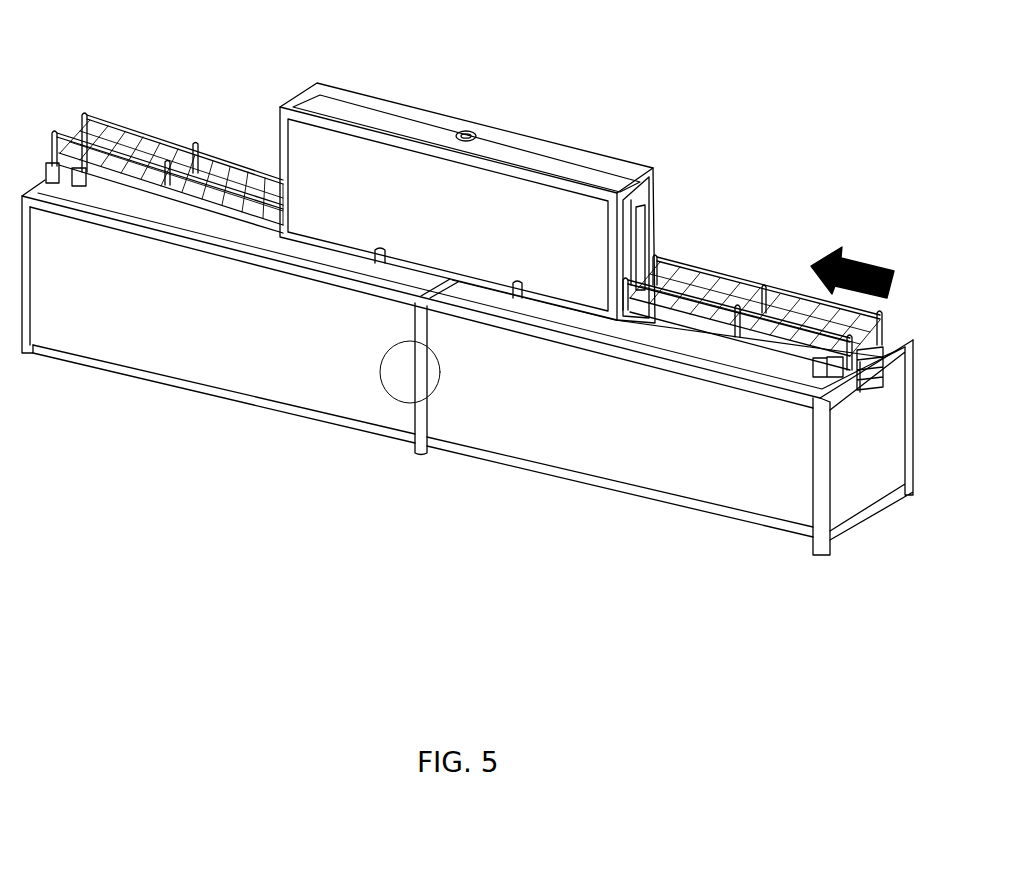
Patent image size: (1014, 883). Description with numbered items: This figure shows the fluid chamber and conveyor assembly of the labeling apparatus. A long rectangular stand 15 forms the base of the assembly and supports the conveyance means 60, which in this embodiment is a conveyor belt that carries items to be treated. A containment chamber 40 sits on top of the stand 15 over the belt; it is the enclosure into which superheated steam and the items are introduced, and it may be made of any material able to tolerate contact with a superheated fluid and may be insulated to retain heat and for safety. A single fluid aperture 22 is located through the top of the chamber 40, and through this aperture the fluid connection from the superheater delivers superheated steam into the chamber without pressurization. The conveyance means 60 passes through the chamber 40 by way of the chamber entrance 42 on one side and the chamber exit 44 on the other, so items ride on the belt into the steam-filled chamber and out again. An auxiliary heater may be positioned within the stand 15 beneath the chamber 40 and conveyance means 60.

The stand 15 is at (548, 437).
The fluid aperture 22 is at (462, 117).
The containment chamber 40 is at (512, 218).
The chamber entrance 42 is at (625, 240).
The chamber exit 44 is at (268, 137).
The conveyance means 60 is at (75, 120).